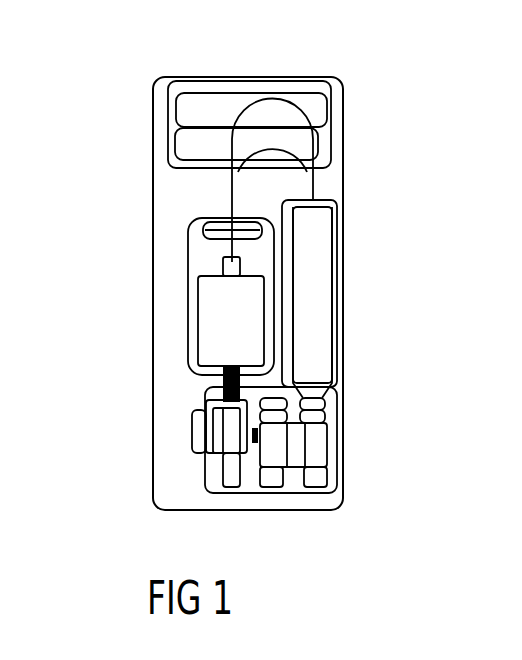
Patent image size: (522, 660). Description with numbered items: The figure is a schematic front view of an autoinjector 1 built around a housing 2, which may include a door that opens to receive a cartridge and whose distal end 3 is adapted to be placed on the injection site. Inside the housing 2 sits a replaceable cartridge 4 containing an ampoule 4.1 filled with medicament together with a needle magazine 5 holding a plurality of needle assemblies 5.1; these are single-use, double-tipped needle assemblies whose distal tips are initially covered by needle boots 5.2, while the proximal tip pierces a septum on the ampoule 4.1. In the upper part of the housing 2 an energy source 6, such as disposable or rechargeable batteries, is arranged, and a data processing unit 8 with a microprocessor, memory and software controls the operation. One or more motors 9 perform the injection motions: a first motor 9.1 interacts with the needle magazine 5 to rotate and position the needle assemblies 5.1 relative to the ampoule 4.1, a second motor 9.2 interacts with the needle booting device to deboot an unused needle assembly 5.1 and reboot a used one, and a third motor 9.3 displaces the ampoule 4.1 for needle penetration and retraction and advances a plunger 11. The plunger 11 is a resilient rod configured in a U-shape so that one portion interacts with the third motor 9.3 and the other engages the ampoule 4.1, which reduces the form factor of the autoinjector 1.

The autoinjector 1 is at (142, 39).
The housing 2 is at (153, 182).
The distal end 3 is at (282, 510).
The cartridge 4 is at (373, 343).
The ampoule 4.1 is at (323, 272).
The needle magazine 5 is at (373, 442).
The needle assembly 5.1 is at (273, 478).
The needle boot 5.2 is at (303, 473).
The energy source 6 is at (333, 106).
The data processing unit 8 is at (183, 296).
The motor 9 is at (158, 426).
The first motor 9.1 is at (196, 443).
The second motor 9.2 is at (228, 427).
The third motor 9.3 is at (213, 331).
The plunger 11 is at (315, 184).